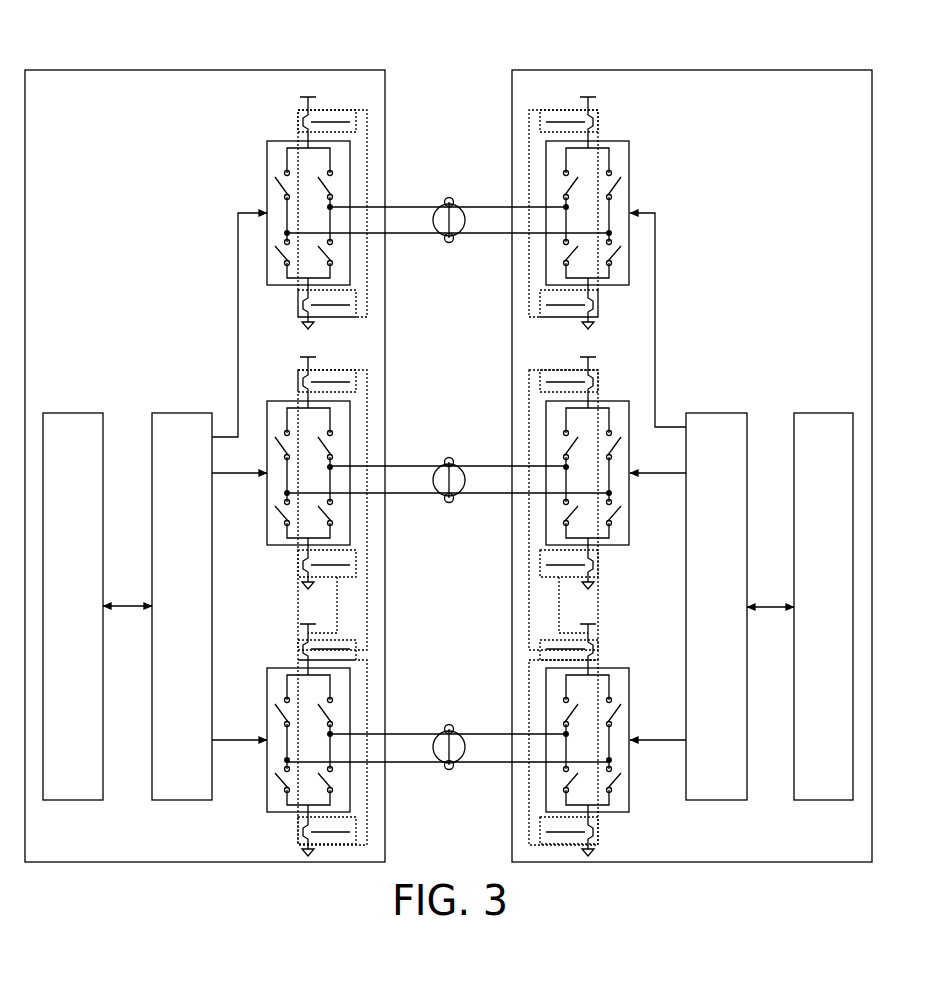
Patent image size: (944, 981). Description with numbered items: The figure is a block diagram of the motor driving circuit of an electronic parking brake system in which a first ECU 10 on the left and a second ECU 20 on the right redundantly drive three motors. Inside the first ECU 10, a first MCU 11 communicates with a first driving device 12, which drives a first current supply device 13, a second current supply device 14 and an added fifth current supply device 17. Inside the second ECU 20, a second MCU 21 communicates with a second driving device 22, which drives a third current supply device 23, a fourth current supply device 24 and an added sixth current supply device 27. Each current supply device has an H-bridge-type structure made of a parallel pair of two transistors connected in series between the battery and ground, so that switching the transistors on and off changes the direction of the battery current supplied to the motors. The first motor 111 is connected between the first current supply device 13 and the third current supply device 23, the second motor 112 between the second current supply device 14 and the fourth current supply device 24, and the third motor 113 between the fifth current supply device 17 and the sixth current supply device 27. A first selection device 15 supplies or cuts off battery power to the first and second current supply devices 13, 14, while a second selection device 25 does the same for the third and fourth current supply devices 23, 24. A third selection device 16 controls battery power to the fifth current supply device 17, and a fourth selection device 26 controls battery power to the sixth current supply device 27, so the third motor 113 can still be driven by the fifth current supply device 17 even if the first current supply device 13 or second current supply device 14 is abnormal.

The first ECU 10 is at (203, 70).
The second ECU 20 is at (690, 70).
The first MCU 11 is at (73, 412).
The first driving device 12 is at (182, 412).
The first current supply device 13 is at (280, 400).
The second current supply device 14 is at (280, 667).
The first selection device 15 is at (367, 393).
The third selection device 16 is at (367, 133).
The fifth current supply device 17 is at (280, 140).
The second MCU 21 is at (824, 412).
The second driving device 22 is at (717, 412).
The third current supply device 23 is at (616, 400).
The fourth current supply device 24 is at (616, 667).
The second selection device 25 is at (529, 395).
The fourth selection device 26 is at (529, 135).
The sixth current supply device 27 is at (618, 140).
The first motor 111 is at (449, 460).
The second motor 112 is at (449, 728).
The third motor 113 is at (449, 203).